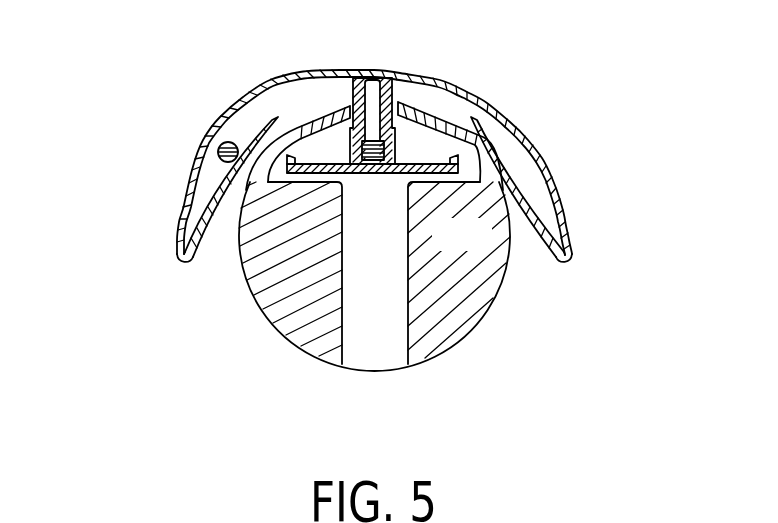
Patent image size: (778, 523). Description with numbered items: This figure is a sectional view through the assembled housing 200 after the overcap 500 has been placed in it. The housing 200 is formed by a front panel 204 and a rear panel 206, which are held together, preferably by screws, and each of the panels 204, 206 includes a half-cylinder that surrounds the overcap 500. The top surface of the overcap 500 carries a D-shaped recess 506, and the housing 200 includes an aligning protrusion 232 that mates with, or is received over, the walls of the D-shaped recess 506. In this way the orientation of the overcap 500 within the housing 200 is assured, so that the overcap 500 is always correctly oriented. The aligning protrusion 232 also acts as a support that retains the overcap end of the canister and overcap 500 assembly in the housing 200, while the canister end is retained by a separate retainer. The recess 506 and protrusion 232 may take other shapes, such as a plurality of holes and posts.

The housing 200 is at (181, 193).
The front panel 204 is at (572, 249).
The rear panel 206 is at (524, 132).
The aligning protrusion 232 is at (289, 168).
The overcap 500 is at (488, 247).
The D-shaped recess 506 is at (418, 146).